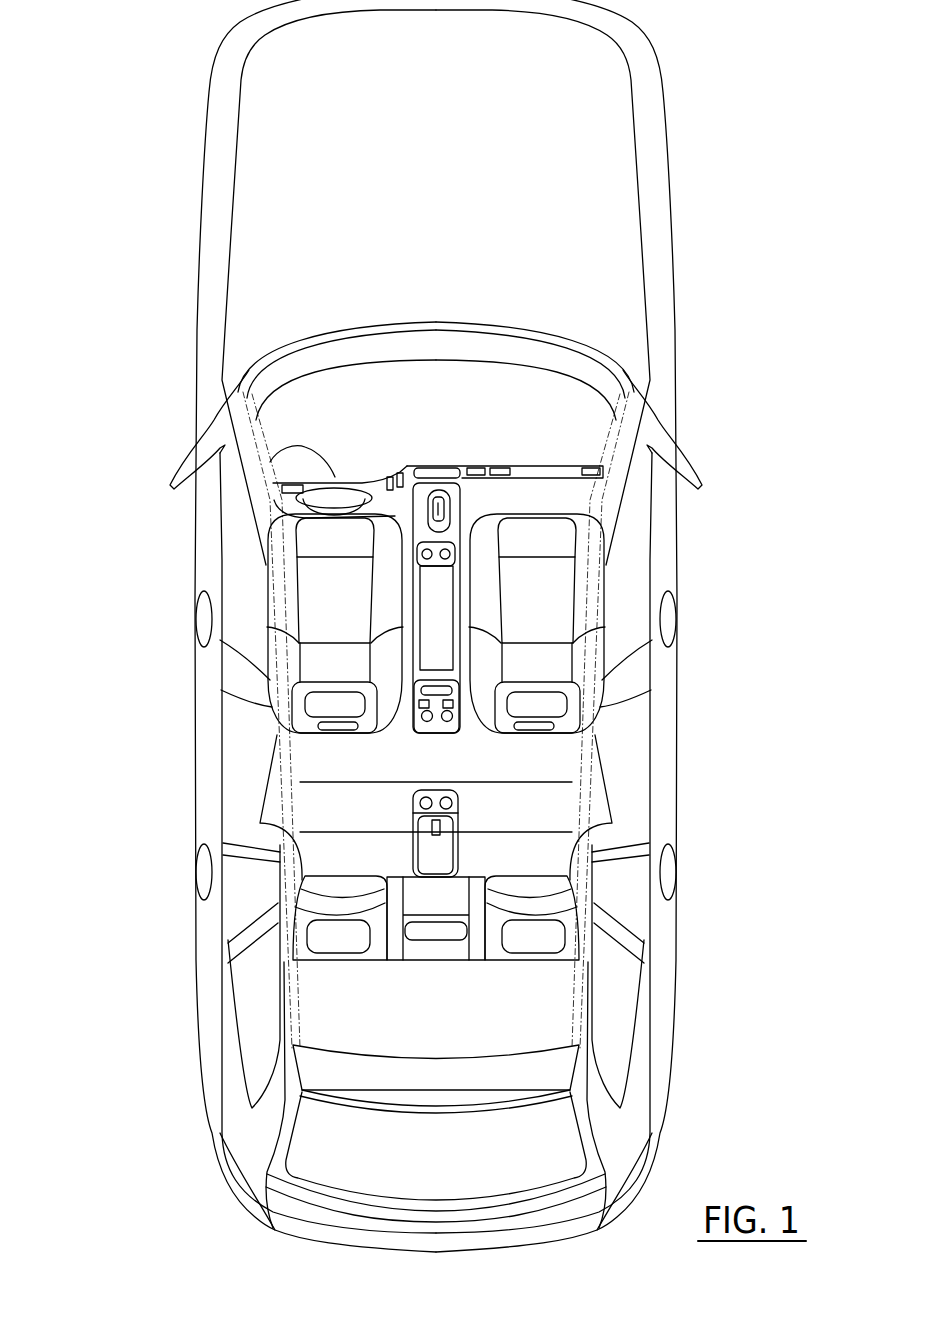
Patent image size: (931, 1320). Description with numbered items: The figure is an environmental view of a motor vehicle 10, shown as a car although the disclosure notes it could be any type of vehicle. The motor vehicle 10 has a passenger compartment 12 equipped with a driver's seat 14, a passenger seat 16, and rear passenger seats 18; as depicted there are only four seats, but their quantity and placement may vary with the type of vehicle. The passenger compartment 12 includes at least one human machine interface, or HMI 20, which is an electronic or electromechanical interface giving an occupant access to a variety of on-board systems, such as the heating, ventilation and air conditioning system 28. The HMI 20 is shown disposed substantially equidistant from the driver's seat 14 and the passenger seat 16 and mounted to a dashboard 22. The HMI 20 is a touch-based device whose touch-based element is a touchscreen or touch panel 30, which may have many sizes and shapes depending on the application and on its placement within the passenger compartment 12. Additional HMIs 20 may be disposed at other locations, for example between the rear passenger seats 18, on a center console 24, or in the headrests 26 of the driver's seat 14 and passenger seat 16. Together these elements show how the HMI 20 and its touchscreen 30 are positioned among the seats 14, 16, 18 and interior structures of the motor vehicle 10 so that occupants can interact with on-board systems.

The motor vehicle 10 is at (697, 96).
The passenger compartment 12 is at (463, 440).
The driver's seat 14 is at (322, 621).
The passenger seat 16 is at (528, 621).
The rear passenger seats 18 is at (333, 869).
The human machine interface (HMI) 20 is at (430, 605).
The dashboard 22 is at (275, 460).
The center console 24 is at (438, 688).
The headrests 26 is at (317, 703).
The heating, ventilation and air conditioning (HVAC) system 28 is at (477, 466).
The touchscreen or touch panel 30 is at (440, 642).